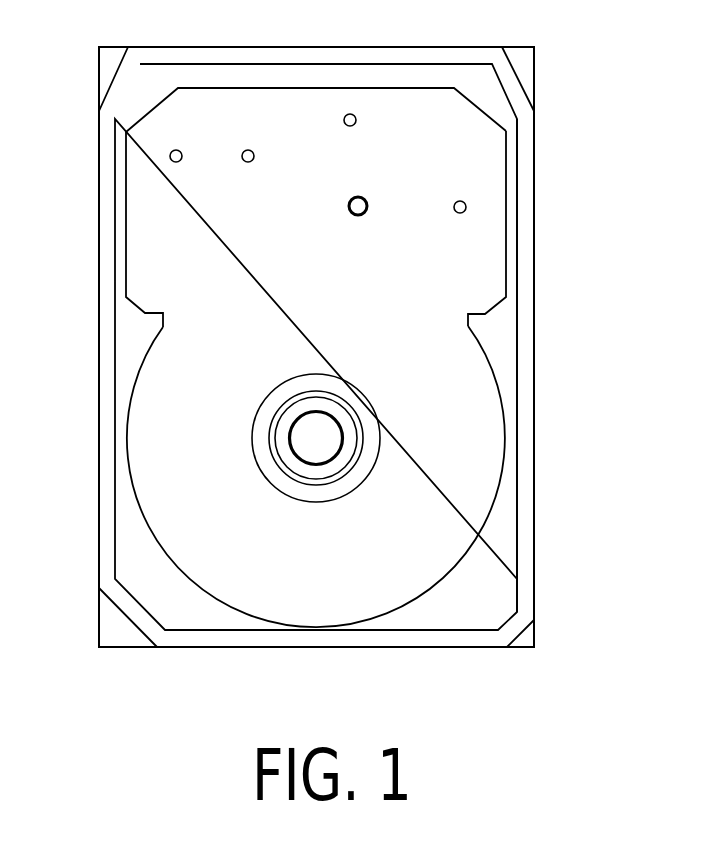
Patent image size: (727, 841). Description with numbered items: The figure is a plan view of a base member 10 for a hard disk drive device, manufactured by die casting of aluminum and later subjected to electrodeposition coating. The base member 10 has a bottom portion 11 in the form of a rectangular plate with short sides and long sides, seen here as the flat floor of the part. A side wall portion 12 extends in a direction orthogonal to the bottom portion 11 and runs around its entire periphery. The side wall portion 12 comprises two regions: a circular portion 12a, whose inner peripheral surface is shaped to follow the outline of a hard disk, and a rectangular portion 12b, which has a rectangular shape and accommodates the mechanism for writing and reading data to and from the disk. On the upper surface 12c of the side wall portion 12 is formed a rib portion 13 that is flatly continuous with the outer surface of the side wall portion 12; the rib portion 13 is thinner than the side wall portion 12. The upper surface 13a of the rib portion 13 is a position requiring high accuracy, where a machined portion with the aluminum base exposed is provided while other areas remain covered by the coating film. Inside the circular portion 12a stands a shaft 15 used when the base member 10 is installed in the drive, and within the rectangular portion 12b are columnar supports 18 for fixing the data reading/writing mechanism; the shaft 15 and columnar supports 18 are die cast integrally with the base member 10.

The base member 10 is at (549, 102).
The bottom portion 11 is at (296, 104).
The side wall portion 12 is at (358, 349).
The circular portion 12a is at (500, 485).
The rectangular portion 12b is at (505, 263).
The upper surface of the side wall portion 12c is at (205, 613).
The rib portion 13 is at (332, 347).
The upper surface of the rib portion 13a is at (523, 487).
The shaft 15 is at (358, 216).
The columnar support 18 is at (180, 162).